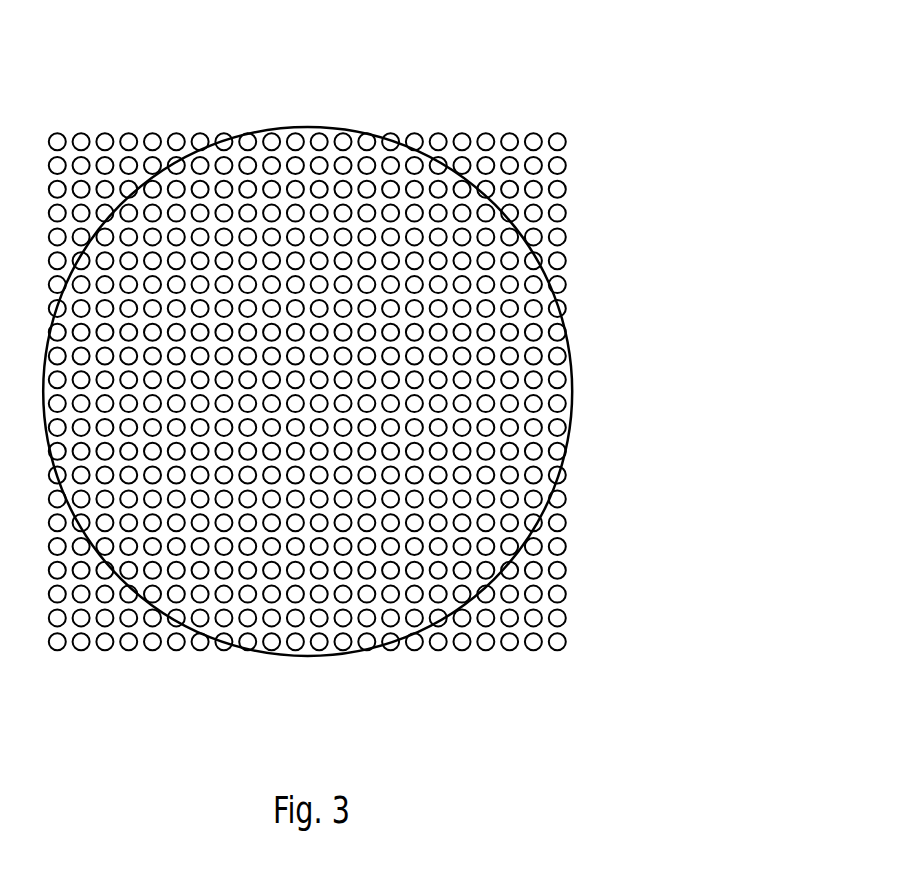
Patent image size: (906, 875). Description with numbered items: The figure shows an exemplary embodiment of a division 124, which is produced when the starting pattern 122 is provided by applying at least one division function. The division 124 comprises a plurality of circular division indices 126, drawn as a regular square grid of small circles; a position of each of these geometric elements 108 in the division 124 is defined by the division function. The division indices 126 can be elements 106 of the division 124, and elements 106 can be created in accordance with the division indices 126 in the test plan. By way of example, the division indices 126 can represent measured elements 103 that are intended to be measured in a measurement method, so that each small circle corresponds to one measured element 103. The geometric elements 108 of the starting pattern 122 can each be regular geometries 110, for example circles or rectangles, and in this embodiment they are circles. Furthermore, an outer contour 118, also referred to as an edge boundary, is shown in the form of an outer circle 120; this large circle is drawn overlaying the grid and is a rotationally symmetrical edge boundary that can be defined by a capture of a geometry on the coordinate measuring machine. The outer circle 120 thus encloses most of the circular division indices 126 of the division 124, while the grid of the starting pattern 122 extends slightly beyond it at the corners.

The measured element 103 is at (353, 426).
The element 106 is at (401, 391).
The geometric element 108 is at (353, 426).
The regular geometry 110 is at (485, 643).
The outer contour 118 is at (401, 391).
The outer circle 120 is at (572, 433).
The starting pattern 122 is at (411, 361).
The division 124 is at (647, 140).
The division index 126 is at (353, 426).